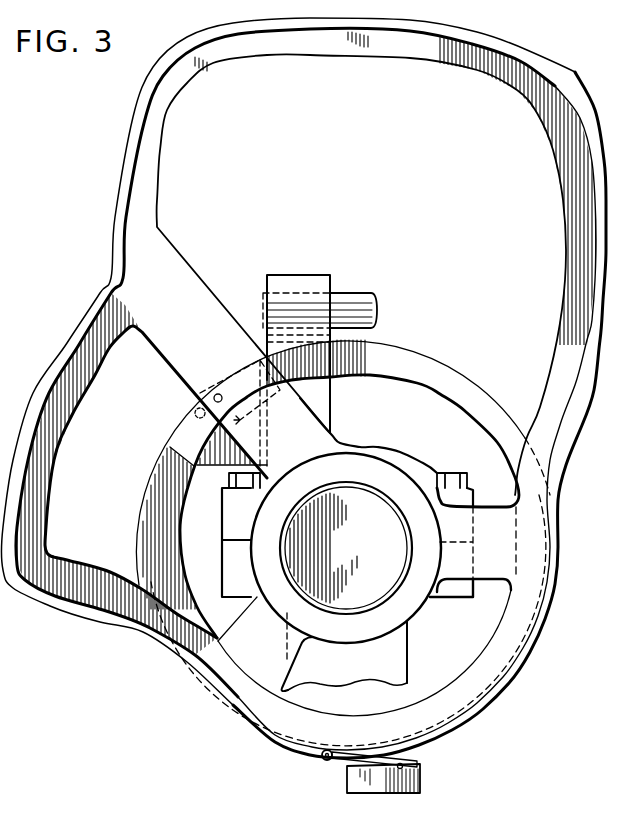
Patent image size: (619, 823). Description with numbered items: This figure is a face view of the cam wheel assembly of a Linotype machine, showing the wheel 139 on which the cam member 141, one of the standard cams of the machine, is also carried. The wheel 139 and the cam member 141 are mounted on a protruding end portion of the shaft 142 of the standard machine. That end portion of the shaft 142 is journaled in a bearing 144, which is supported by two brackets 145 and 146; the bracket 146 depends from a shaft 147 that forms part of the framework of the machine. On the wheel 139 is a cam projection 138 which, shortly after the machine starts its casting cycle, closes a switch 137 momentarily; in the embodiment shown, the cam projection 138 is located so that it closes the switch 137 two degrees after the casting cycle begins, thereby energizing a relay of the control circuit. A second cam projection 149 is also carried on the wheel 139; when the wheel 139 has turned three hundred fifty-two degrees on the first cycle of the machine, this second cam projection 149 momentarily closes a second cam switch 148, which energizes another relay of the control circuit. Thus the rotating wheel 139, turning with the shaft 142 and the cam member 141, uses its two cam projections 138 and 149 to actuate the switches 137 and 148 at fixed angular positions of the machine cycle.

The switch 137 is at (336, 770).
The cam projection 138 is at (345, 756).
The wheel 139 is at (470, 388).
The cam member 141 is at (111, 238).
The shaft 142 is at (365, 495).
The bearing 144 is at (417, 477).
The bracket 145 is at (397, 647).
The bracket 146 is at (330, 398).
The shaft 147 is at (353, 299).
The second cam switch 148 is at (184, 410).
The second cam projection 149 is at (218, 394).